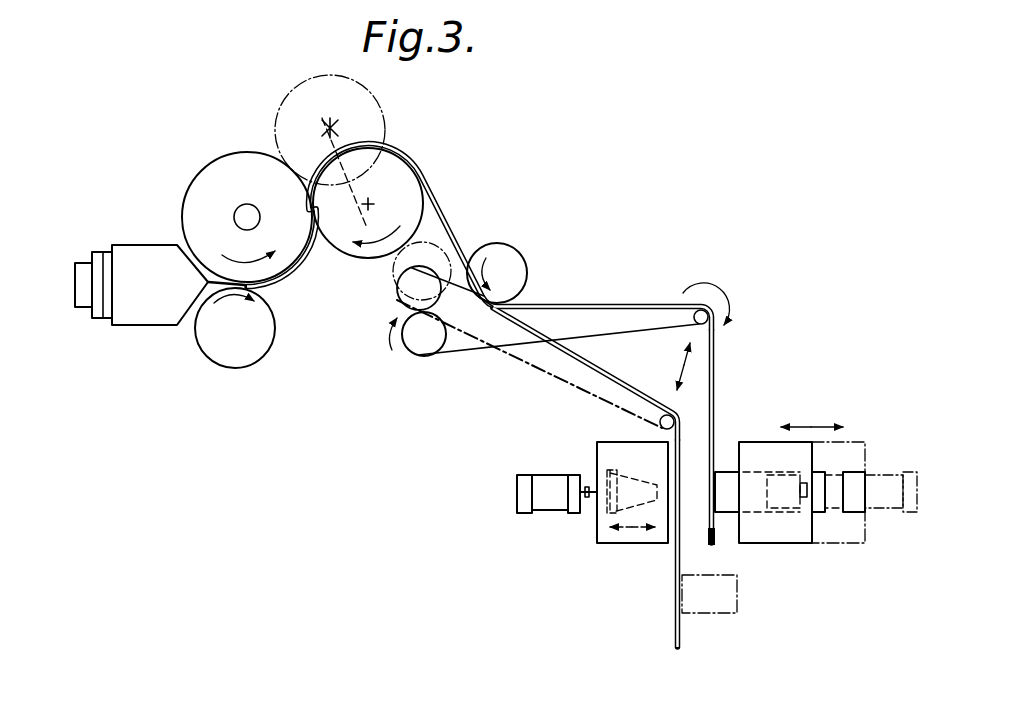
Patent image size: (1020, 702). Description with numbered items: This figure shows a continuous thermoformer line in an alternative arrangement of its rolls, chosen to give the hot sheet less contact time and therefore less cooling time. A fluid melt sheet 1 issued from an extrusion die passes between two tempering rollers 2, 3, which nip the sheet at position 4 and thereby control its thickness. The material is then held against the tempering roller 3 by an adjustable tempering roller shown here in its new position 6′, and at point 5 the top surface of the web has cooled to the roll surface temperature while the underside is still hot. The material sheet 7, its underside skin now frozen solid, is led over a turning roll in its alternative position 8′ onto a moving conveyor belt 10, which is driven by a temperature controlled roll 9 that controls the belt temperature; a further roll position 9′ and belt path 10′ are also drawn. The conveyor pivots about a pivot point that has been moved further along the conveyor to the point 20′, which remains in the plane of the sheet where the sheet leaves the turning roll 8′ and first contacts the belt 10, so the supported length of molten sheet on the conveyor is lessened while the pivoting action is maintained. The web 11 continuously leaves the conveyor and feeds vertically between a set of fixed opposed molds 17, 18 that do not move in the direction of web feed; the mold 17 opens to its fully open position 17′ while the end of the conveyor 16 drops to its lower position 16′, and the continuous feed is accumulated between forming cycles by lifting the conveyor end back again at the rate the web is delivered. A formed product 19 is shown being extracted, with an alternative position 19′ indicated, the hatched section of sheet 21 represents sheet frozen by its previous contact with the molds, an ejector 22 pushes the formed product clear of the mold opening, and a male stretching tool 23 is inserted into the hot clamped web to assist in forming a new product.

The fluid melt sheet 1 is at (217, 291).
The tempering roller 2 is at (218, 353).
The tempering roller 3 is at (193, 198).
The nip position 4 is at (274, 286).
The point on web 5 is at (327, 162).
The alternative position of adjustable tempering roller 6′ is at (393, 170).
The material sheet 7 is at (433, 204).
The alternative position of turning roll 8′ is at (507, 243).
The temperature controlled roll 9 is at (421, 348).
The guide roller in alternative position 9′ is at (486, 306).
The conveyor belt 10 is at (563, 315).
The alternative web path 10′ is at (602, 382).
The web 11 is at (719, 355).
The end of conveyor 16 is at (683, 302).
The lower position of conveyor end 16′ is at (662, 416).
The mold 17 is at (800, 538).
The fully open position of mold 17′ is at (850, 535).
The mold 18 is at (620, 535).
The formed product 19 is at (732, 468).
The guide plate in alternative position 19′ is at (735, 607).
The new position of pivot point 20′ is at (500, 311).
The sheet section 21 is at (720, 539).
The ejector 22 is at (800, 478).
The male stretching tool 23 is at (600, 515).